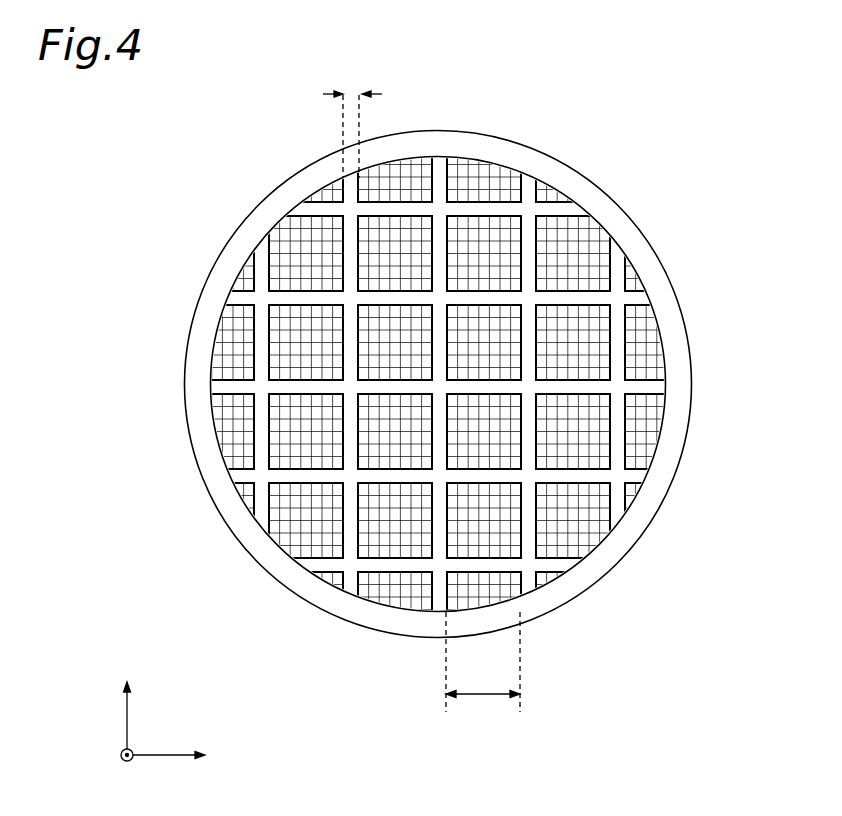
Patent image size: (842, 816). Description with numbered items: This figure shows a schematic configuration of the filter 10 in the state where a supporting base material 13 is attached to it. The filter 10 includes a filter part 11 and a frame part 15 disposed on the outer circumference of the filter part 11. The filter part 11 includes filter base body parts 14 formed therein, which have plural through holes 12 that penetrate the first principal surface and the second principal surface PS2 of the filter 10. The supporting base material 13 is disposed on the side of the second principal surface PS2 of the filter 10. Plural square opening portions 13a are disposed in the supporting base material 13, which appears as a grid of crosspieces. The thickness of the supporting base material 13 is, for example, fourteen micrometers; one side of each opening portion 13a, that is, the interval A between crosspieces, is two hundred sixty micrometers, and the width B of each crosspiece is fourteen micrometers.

The filter 10 is at (196, 182).
The filter part 11 is at (668, 340).
The through holes 12 is at (645, 412).
The supporting base material 13 is at (640, 297).
The opening portion 13a is at (495, 225).
The filter base body parts 14 is at (582, 505).
The frame part 15 is at (572, 582).
The second principal surface PS2 is at (608, 215).